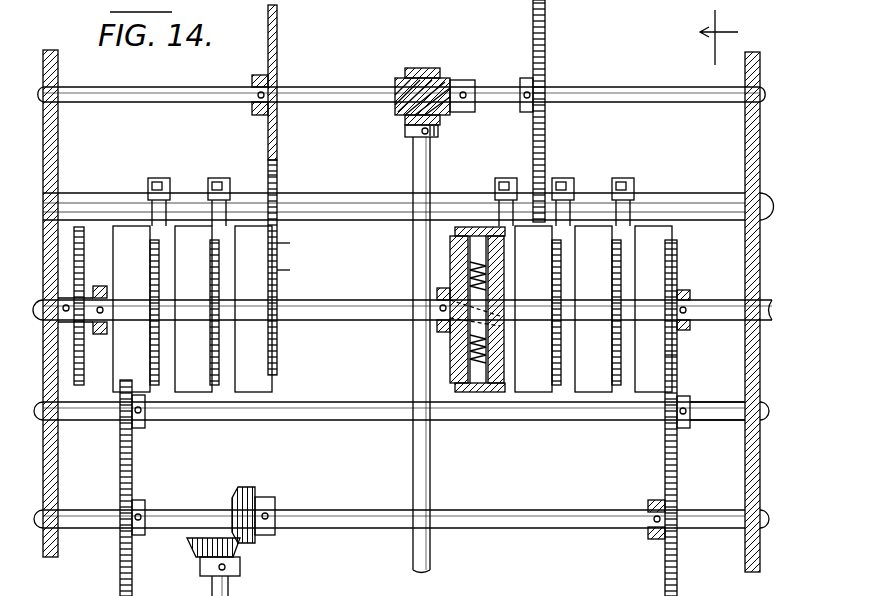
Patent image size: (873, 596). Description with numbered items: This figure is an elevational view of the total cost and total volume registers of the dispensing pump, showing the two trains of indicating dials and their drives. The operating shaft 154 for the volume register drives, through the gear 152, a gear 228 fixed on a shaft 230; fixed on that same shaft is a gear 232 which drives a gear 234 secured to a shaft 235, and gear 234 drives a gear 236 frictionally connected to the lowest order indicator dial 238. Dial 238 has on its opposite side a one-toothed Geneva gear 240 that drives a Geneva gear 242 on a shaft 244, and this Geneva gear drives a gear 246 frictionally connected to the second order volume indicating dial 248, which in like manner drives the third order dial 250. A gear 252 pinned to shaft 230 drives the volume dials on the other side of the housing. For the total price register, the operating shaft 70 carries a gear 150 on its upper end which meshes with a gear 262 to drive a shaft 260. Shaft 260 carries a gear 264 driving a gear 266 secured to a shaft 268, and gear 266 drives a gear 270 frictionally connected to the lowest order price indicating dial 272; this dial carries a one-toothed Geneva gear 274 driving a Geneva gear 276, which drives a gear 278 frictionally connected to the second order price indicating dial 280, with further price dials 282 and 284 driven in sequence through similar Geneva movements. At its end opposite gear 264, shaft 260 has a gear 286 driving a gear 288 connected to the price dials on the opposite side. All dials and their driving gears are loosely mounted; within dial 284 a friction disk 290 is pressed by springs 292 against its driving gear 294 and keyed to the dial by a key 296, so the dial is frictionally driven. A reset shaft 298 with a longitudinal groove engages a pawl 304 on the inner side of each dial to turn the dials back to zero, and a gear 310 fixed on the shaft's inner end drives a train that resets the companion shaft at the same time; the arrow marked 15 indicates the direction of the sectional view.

The section line for FIG. 15 is at (735, 37).
The operating shaft 70 is at (230, 590).
The gear 150 is at (242, 553).
The gear 152 is at (420, 78).
The operating shaft 154 is at (413, 443).
The gear 228 is at (400, 113).
The shaft 230 is at (132, 101).
The gear 232 is at (268, 137).
The gear 234 is at (279, 170).
The shaft 235 is at (347, 195).
The gear 236 is at (280, 244).
The lowest order indicator dial 238 is at (280, 270).
The one-toothed Geneva gear 240 is at (243, 393).
The Geneva gear 242 is at (224, 184).
The shaft 244 is at (134, 185).
The gear 246 is at (214, 393).
The second order volume indicating dial 248 is at (190, 393).
The third order dial 250 is at (148, 393).
The gear 252 is at (546, 146).
The shaft 260 is at (322, 512).
The gear 262 is at (248, 494).
The gear 264 is at (665, 565).
The gear 266 is at (690, 398).
The shaft 268 is at (712, 420).
The gear 270 is at (675, 270).
The lowest order price indicating dial 272 is at (660, 353).
The one-toothed Geneva gear 274 is at (640, 393).
The Geneva gear 276 is at (632, 184).
The gear 278 is at (614, 393).
The second order price indicating dial 280 is at (592, 393).
The price indicating dial 282 is at (545, 393).
The price indicating dial 284 is at (468, 393).
The gear 286 is at (120, 590).
The gear 288 is at (125, 430).
The friction disk 290 is at (485, 393).
The springs 292 is at (485, 227).
The driving gear 294 is at (490, 393).
The key 296 is at (432, 302).
The shaft 298 is at (322, 310).
The pawl 304 is at (445, 262).
The gear 310 is at (92, 384).